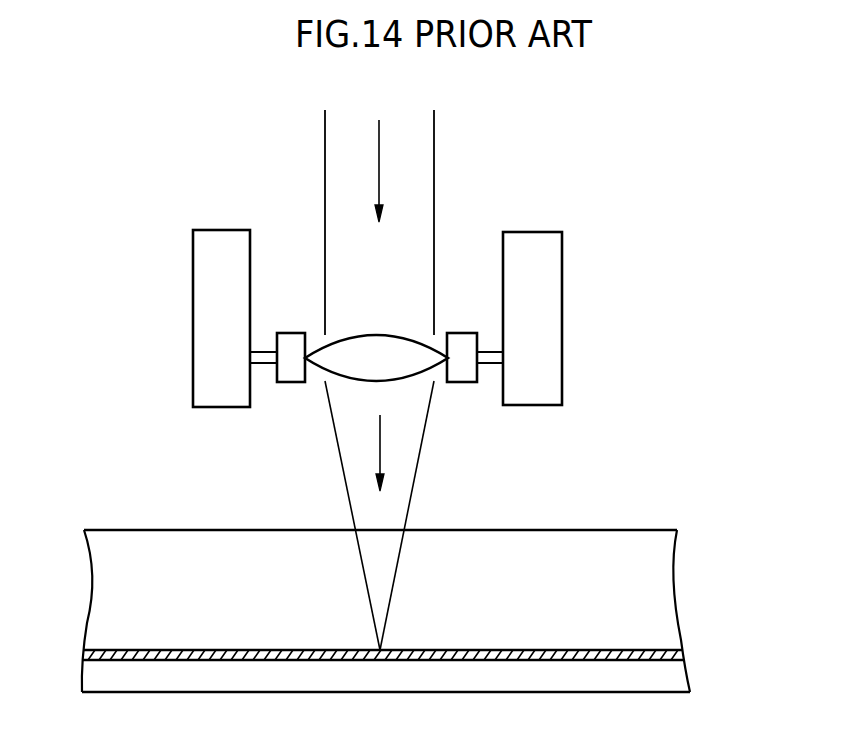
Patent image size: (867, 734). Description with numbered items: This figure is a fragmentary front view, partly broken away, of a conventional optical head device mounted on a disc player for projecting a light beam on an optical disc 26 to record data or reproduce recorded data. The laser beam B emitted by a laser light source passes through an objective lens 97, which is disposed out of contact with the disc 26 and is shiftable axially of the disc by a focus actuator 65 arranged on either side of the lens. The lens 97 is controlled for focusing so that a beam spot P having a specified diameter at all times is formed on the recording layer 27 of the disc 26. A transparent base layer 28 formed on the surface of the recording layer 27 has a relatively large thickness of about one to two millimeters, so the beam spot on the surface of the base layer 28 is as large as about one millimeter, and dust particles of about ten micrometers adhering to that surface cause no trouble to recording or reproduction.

The laser beam B is at (434, 152).
The focus actuator 65 is at (220, 230).
The objective lens 97 is at (398, 348).
The optical disc 26 is at (550, 530).
The transparent base layer 28 is at (648, 580).
The recording layer 27 is at (652, 652).
The beam spot P is at (380, 650).